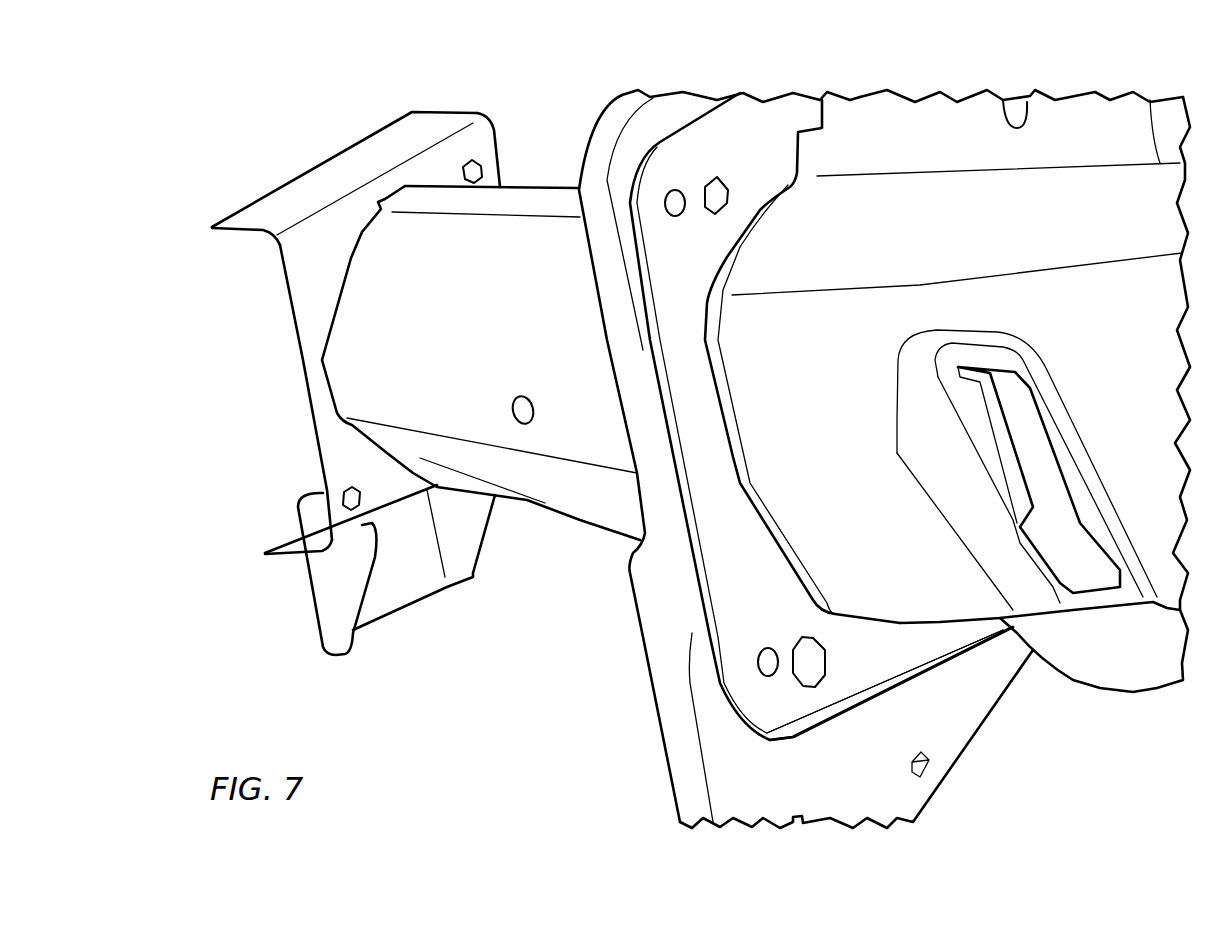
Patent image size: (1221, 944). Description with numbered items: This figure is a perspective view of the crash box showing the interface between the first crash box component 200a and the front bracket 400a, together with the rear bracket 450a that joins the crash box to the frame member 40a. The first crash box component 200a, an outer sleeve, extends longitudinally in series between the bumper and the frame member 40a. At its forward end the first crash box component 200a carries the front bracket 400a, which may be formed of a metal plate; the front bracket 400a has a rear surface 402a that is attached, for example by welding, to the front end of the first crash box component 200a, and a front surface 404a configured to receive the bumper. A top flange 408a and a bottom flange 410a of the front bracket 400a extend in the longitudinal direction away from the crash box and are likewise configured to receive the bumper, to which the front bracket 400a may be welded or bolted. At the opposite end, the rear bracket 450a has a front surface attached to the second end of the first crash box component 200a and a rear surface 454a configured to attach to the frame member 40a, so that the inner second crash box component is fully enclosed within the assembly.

The frame member 40a is at (913, 210).
The first crash box component 200a is at (508, 202).
The rear surface 402a is at (477, 143).
The front surface 404a is at (285, 296).
The top flange 408a is at (236, 220).
The bottom flange 410a is at (290, 547).
The front bracket 400a is at (420, 597).
The rear bracket 450a is at (655, 735).
The rear surface 454a is at (870, 655).